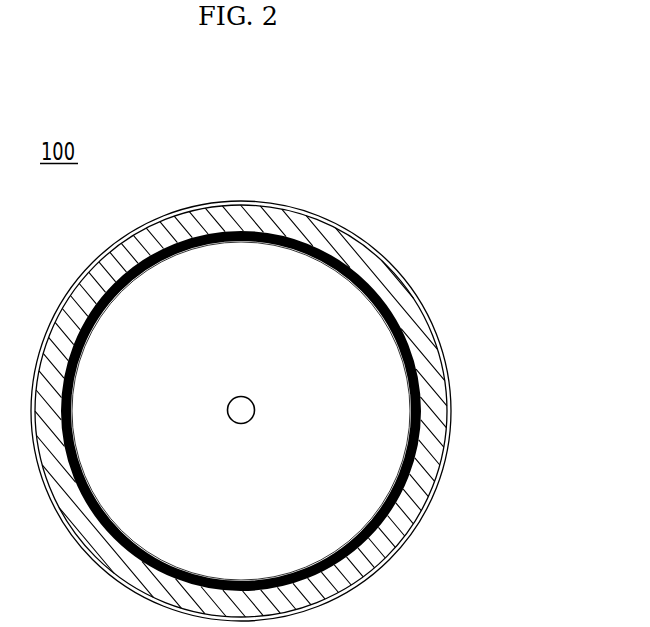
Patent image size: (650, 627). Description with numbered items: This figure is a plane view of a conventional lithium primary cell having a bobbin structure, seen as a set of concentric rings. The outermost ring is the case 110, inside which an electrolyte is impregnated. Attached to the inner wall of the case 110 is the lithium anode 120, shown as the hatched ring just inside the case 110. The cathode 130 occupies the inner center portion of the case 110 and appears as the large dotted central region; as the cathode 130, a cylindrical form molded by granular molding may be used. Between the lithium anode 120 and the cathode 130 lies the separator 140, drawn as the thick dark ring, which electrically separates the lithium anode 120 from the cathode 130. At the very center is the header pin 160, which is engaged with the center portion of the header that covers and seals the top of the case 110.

The case 110 is at (413, 285).
The lithium anode 120 is at (422, 348).
The cathode 130 is at (378, 475).
The separator 140 is at (418, 442).
The header pin 160 is at (243, 413).